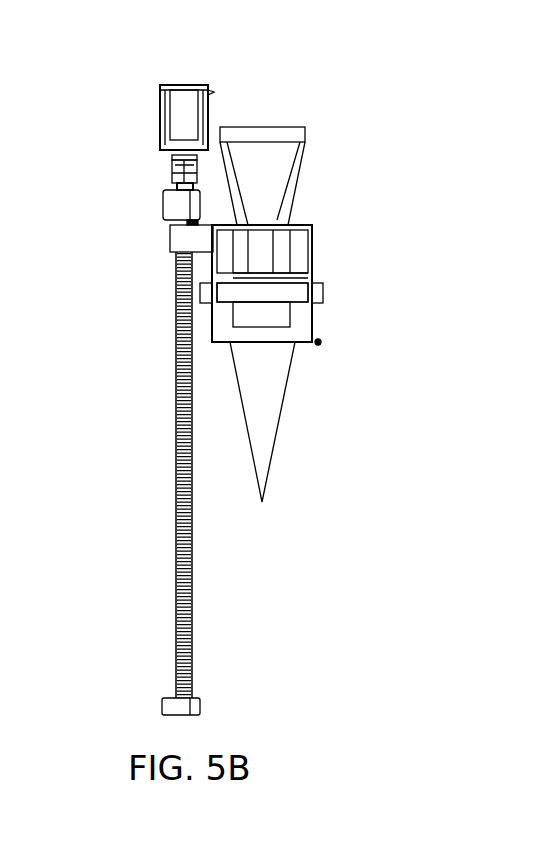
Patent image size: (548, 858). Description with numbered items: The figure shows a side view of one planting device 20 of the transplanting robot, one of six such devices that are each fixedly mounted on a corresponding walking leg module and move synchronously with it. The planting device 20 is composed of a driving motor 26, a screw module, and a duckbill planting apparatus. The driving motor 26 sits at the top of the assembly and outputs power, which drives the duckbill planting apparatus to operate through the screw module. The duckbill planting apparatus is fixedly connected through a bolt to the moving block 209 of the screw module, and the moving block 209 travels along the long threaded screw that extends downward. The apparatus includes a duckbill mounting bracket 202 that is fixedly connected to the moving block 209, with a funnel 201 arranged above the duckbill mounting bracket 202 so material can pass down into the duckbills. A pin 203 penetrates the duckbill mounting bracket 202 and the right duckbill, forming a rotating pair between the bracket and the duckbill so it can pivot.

The planting device 20 is at (204, 52).
The driving motor 26 is at (180, 120).
The funnel 201 is at (267, 172).
The duckbill mounting bracket 202 is at (410, 278).
The pin 203 is at (288, 295).
The moving block 209 is at (188, 240).